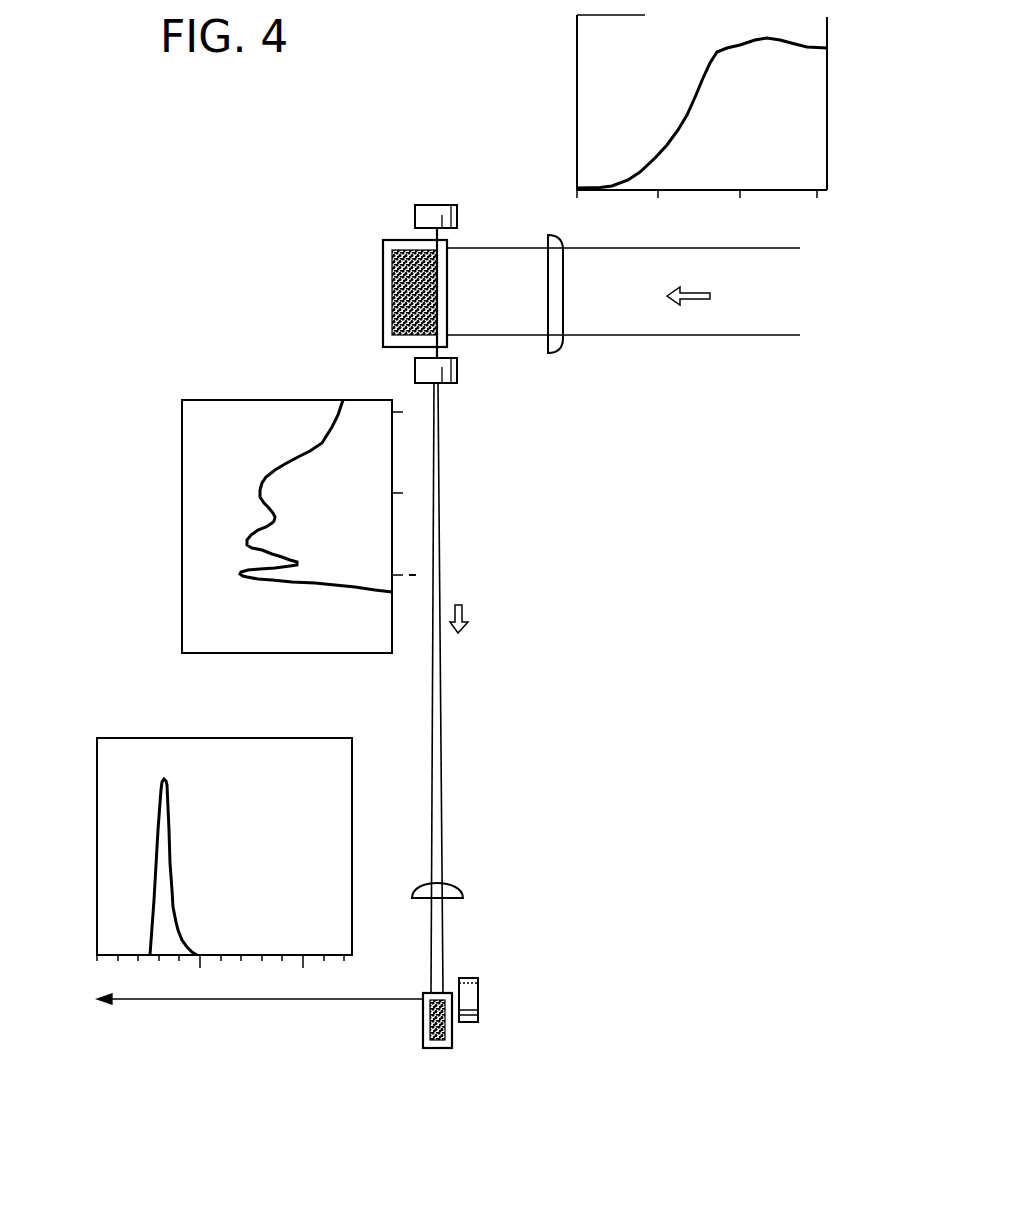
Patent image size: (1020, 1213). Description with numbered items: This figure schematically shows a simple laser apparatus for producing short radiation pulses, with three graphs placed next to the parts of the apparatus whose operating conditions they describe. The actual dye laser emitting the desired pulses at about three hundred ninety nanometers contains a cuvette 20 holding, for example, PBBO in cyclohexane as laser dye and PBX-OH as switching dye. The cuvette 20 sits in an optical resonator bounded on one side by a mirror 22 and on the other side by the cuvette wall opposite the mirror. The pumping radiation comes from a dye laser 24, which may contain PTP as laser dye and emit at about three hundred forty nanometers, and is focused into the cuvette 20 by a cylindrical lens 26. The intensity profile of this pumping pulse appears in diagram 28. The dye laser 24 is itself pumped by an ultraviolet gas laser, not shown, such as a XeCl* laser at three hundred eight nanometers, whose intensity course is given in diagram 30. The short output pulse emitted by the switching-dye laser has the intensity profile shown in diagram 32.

The cuvette 20 is at (423, 1032).
The mirror 22 is at (470, 979).
The dye laser 24 is at (363, 210).
The cylindrical lens 26 is at (448, 883).
The diagram 28 is at (226, 445).
The diagram 30 is at (630, 74).
The diagram 32 is at (340, 780).